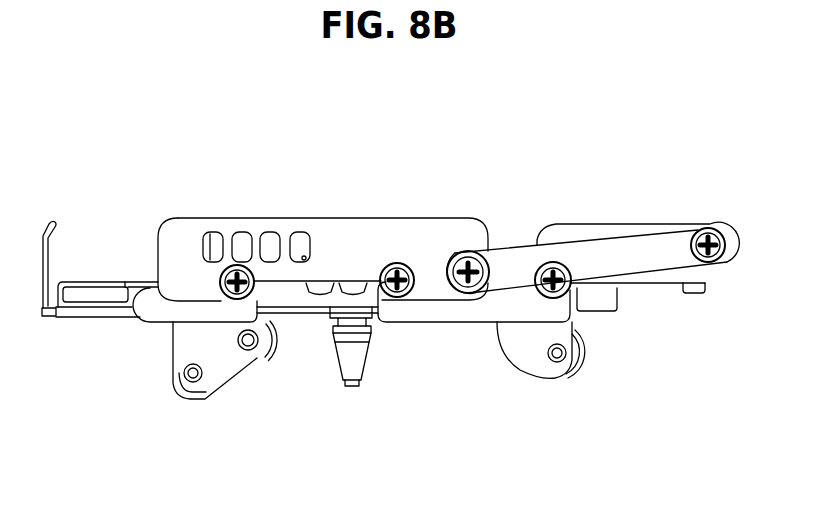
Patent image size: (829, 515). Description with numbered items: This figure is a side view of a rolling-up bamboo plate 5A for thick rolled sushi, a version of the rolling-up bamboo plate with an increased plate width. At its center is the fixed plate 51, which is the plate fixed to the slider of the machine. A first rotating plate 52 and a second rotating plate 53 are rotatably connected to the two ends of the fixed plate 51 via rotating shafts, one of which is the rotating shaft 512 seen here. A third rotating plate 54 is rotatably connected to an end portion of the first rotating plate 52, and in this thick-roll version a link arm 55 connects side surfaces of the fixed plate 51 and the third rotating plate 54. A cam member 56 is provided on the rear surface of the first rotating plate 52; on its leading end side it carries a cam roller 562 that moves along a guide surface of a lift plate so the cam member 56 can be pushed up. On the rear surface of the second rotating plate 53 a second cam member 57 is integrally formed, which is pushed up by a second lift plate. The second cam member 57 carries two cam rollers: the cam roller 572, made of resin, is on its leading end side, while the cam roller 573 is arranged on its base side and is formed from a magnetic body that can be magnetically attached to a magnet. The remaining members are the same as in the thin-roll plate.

The rolling-up bamboo plate for thick rolled sushi 5A is at (437, 163).
The fixed plate 51 is at (320, 215).
The first rotating plate 52 is at (453, 330).
The second rotating plate 53 is at (108, 262).
The third rotating plate 54 is at (647, 222).
The link arm 55 is at (603, 247).
The cam member 56 is at (591, 386).
The cam roller 562 is at (555, 381).
The second cam member 57 is at (212, 412).
The cam roller 572 is at (172, 380).
The cam roller 573 is at (258, 363).
The rotating shaft 512 is at (351, 387).